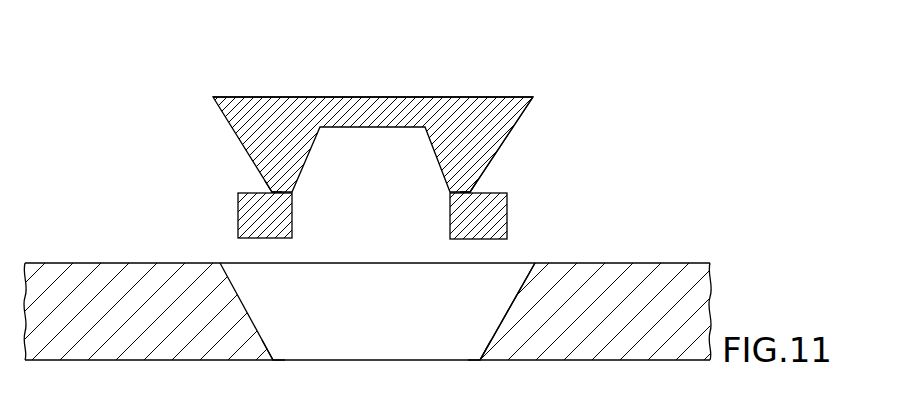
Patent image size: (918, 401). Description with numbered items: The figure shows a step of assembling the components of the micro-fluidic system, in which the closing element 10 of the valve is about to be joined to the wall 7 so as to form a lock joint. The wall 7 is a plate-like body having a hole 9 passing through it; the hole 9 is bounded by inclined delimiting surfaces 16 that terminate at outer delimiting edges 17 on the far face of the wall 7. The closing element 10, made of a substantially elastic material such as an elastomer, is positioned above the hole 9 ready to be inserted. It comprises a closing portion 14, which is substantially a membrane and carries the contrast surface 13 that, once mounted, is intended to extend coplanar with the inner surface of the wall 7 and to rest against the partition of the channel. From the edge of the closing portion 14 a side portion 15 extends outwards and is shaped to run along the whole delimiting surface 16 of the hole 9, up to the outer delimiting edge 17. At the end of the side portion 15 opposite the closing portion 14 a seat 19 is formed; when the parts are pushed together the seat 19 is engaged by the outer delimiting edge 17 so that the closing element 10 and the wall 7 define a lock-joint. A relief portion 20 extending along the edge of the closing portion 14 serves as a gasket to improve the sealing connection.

The wall 7 is at (597, 282).
The hole 9 is at (370, 303).
The closing element 10 is at (433, 75).
The contrast surface 13 is at (390, 97).
The closing portion 14 is at (328, 97).
The side portion 15 is at (490, 143).
The delimiting surface 16 is at (493, 332).
The outer delimiting edge 17 is at (274, 363).
The seat 19 is at (272, 192).
The relief portion 20 is at (250, 218).